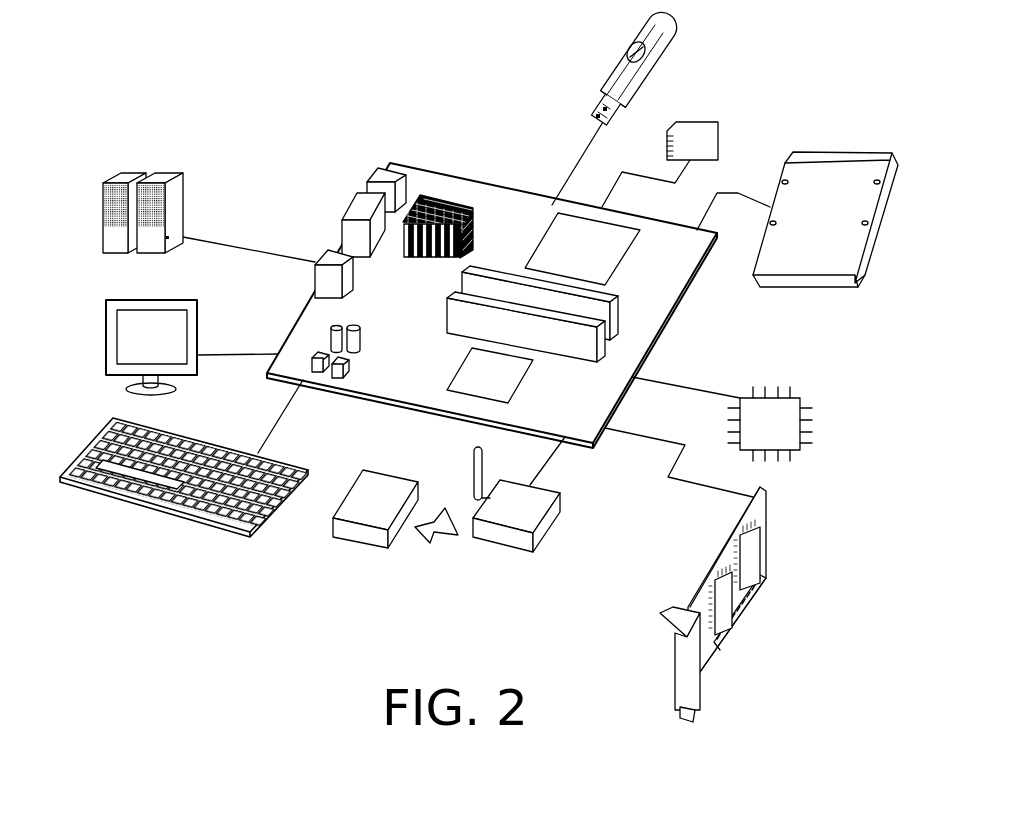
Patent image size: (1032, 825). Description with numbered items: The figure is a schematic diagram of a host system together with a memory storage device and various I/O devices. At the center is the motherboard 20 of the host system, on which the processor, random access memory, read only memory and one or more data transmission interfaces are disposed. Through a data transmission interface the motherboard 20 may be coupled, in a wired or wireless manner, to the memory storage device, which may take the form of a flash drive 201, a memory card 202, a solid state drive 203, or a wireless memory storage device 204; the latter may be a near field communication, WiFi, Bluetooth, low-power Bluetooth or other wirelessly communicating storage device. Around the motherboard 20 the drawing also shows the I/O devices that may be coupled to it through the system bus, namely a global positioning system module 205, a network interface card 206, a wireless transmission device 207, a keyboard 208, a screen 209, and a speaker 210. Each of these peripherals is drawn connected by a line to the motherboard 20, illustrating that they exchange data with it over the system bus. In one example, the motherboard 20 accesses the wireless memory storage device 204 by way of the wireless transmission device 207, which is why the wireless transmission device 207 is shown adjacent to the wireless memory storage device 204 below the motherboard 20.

The motherboard 20 is at (490, 196).
The flash drive 201 is at (615, 60).
The memory card 202 is at (718, 130).
The solid state drive 203 is at (845, 150).
The wireless memory storage device 204 is at (346, 486).
The global positioning system module 205 is at (812, 424).
The network interface card 206 is at (765, 547).
The wireless transmission device 207 is at (553, 533).
The keyboard 208 is at (188, 515).
The screen 209 is at (106, 358).
The speaker 210 is at (103, 237).